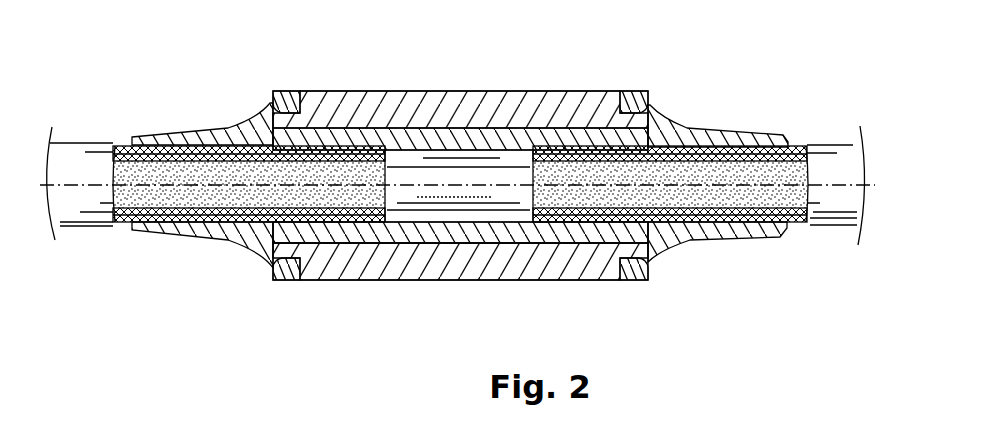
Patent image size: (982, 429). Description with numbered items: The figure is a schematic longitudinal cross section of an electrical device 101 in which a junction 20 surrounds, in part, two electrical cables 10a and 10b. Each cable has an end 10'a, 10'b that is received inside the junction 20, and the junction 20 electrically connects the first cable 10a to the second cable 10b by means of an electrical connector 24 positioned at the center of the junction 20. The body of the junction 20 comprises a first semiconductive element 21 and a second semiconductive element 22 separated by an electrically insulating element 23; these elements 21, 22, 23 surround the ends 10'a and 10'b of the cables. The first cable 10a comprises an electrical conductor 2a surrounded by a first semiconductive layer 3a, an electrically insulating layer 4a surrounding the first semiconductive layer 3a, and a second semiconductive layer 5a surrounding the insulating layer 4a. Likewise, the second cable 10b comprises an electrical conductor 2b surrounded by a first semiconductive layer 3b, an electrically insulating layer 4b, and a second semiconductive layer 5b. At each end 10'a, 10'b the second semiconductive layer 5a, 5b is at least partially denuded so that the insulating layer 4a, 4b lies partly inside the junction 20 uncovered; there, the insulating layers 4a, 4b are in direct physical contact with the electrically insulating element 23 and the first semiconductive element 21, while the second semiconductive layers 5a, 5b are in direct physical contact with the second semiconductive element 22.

The device 101 is at (145, 307).
The second semiconductive layer 5a is at (97, 158).
The second semiconductive layer 5b is at (836, 160).
The first electrical cable 10a is at (98, 240).
The second electrical cable 10b is at (807, 242).
The end of first electrical cable 10'a is at (339, 244).
The end of second electrical cable 10'b is at (615, 243).
The junction 20 is at (468, 288).
The first semiconductive element 21 is at (503, 130).
The second semiconductive element 22 is at (290, 96).
The electrically insulating element 23 is at (349, 145).
The electrical connector 24 is at (443, 163).
The first semiconductive layer 3a is at (163, 140).
The first semiconductive layer 3b is at (578, 143).
The electrically insulating layer 4a is at (280, 255).
The electrically insulating layer 4b is at (710, 243).
The electrical conductor 2a is at (366, 232).
The electrical conductor 2b is at (552, 225).